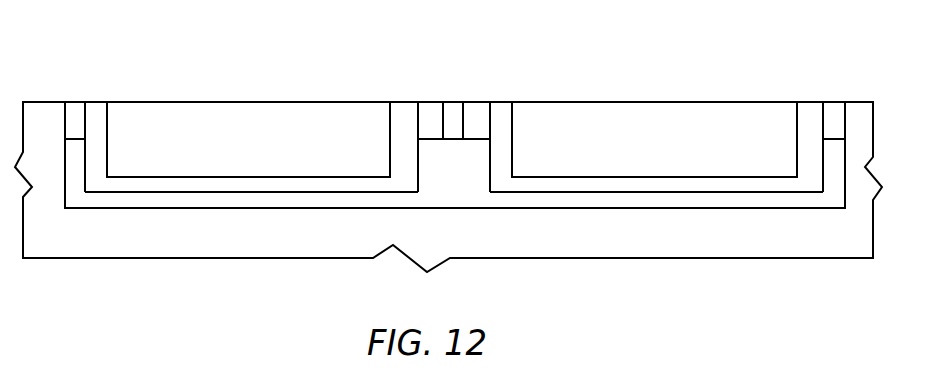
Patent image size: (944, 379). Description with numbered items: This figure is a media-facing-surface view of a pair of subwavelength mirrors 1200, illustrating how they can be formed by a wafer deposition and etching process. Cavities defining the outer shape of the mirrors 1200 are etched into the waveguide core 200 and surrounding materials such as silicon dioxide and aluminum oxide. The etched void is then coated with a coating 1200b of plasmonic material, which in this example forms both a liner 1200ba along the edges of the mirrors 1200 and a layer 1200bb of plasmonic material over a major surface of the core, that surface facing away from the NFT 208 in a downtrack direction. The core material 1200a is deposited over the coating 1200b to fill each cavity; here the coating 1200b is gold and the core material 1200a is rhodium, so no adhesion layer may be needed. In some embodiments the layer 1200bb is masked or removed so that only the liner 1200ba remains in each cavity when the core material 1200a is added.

The waveguide core 200 is at (456, 193).
The NFT 208 is at (458, 108).
The subwavelength mirror 1200 is at (455, 126).
The core material 1200a is at (313, 108).
The coating 1200b is at (455, 145).
The liner 1200ba is at (100, 118).
The layer 1200bb is at (217, 185).